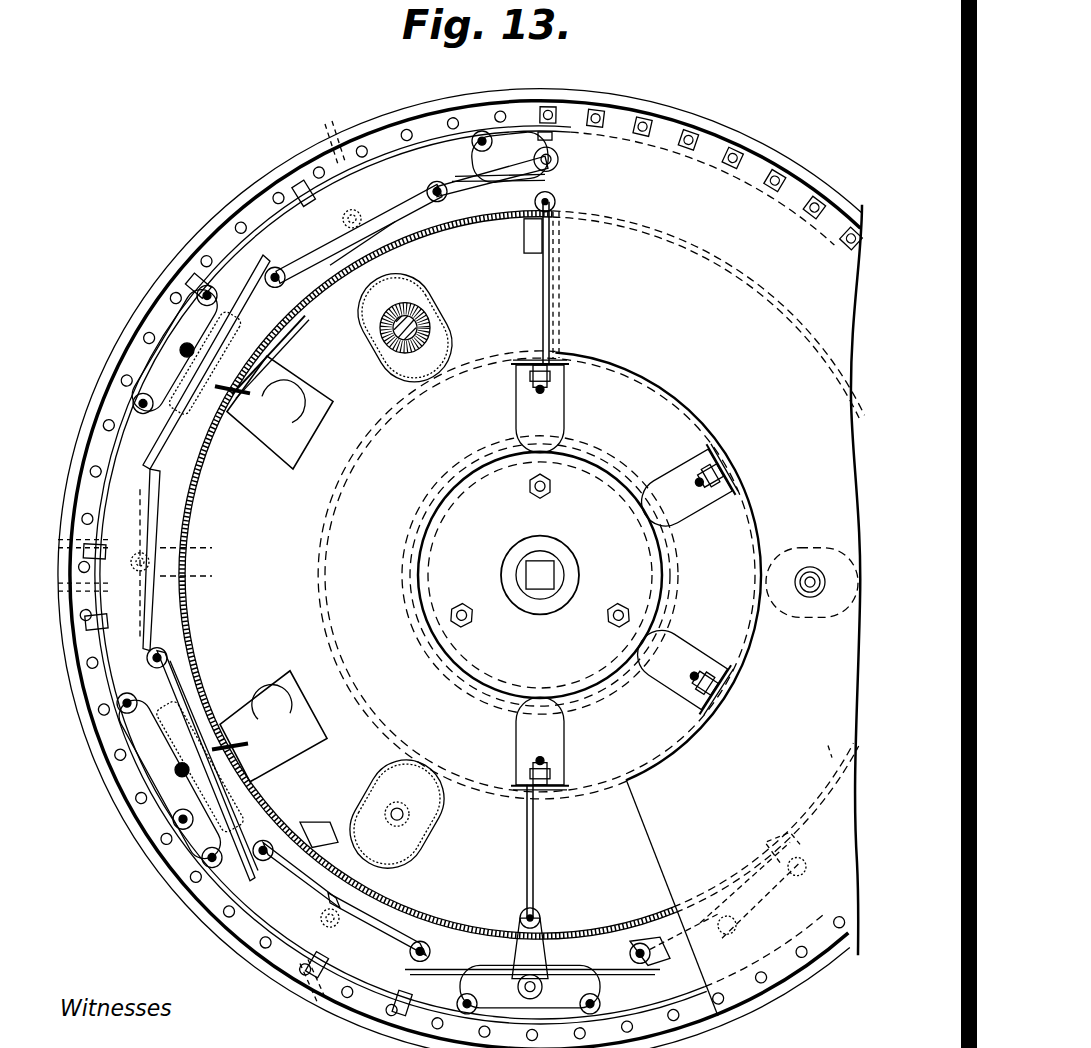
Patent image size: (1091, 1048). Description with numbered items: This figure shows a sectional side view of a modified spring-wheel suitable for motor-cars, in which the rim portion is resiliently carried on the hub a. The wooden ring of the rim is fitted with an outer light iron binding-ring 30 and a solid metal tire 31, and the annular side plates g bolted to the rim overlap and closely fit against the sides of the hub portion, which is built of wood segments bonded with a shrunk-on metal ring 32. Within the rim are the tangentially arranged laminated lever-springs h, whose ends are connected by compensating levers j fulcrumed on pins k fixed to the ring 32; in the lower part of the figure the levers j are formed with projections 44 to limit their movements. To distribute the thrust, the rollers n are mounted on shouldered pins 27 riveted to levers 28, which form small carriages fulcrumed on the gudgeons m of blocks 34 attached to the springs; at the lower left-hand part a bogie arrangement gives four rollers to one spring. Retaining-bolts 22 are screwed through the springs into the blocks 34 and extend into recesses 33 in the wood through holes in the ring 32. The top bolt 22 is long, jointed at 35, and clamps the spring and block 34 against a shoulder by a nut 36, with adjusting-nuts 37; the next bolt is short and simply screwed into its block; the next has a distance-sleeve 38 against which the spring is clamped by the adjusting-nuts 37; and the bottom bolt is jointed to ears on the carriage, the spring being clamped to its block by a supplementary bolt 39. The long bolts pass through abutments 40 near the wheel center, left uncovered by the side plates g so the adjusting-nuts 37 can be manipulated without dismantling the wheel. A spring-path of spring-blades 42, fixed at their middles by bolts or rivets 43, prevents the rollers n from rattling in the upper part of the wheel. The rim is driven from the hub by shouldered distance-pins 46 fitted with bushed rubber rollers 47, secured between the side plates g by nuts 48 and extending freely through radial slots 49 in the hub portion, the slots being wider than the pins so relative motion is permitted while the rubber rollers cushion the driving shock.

The retaining-screw (bolt) 22 is at (552, 300).
The pin 27 is at (84, 720).
The lever (carriage) 28 is at (125, 296).
The binding-ring 30 is at (700, 130).
The metal tire 31 is at (760, 165).
The shrunk-on metal ring 32 is at (295, 308).
The recess 33 is at (280, 410).
The block 34 is at (560, 165).
The joint 35 is at (556, 206).
The nut 36 is at (554, 142).
The adjusting-nut 37 is at (526, 380).
The distance-sleeve 38 is at (222, 718).
The supplementary bolt 39 is at (512, 964).
The abutment 40 is at (566, 372).
The spring-blade 42 is at (272, 218).
The bolt or rivet 43 is at (322, 130).
The projection 44 is at (800, 810).
The distance-pin 46 is at (430, 334).
The rubber roller 47 is at (418, 322).
The nut 48 is at (811, 568).
The radial slot 49 is at (392, 362).
The hub a is at (540, 575).
The annular side plate g is at (554, 645).
The laminated lever-spring h is at (401, 567).
The compensating lever j is at (474, 587).
The fulcrum pin k is at (427, 581).
The gudgeon m is at (199, 571).
The roller n is at (373, 571).